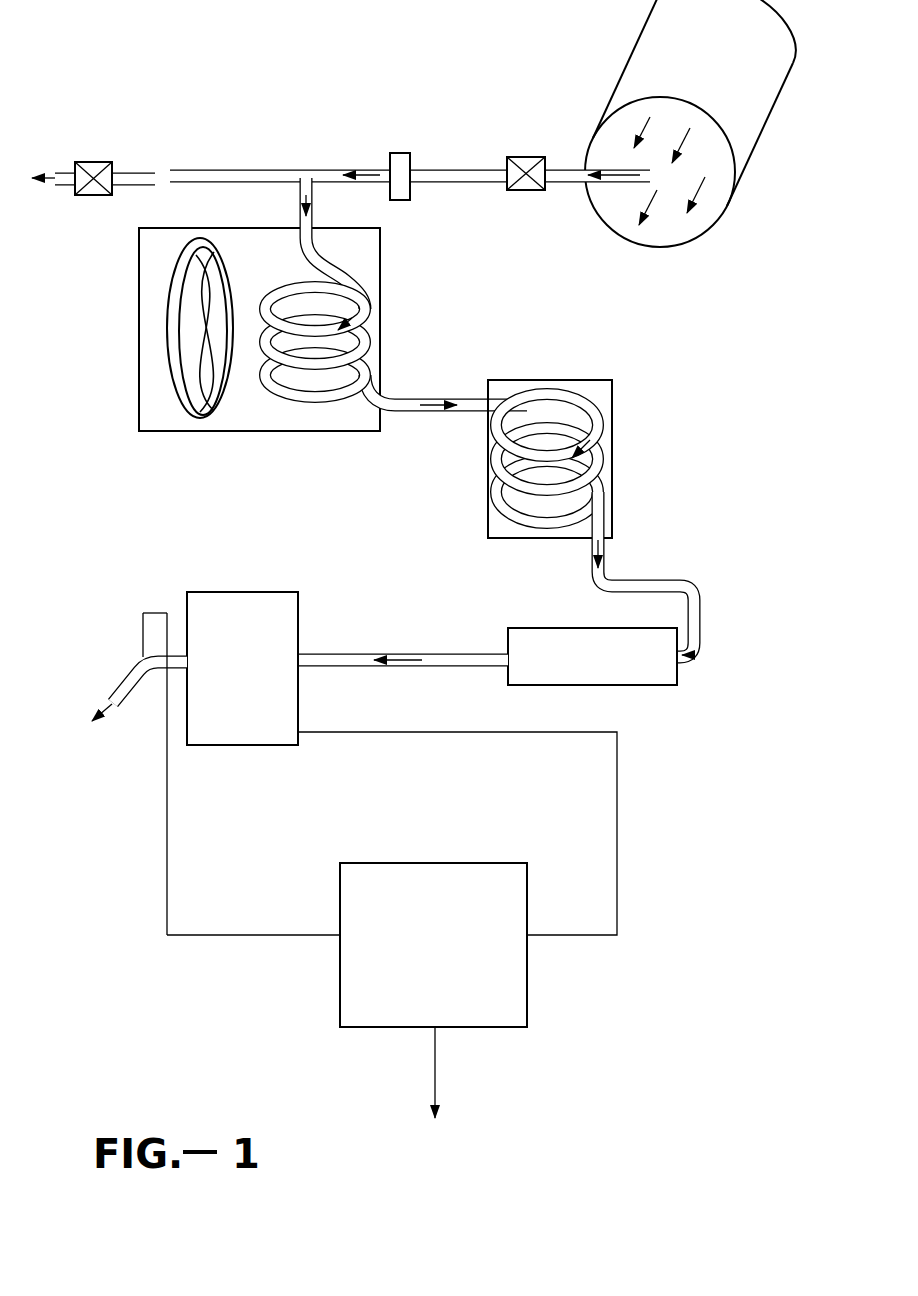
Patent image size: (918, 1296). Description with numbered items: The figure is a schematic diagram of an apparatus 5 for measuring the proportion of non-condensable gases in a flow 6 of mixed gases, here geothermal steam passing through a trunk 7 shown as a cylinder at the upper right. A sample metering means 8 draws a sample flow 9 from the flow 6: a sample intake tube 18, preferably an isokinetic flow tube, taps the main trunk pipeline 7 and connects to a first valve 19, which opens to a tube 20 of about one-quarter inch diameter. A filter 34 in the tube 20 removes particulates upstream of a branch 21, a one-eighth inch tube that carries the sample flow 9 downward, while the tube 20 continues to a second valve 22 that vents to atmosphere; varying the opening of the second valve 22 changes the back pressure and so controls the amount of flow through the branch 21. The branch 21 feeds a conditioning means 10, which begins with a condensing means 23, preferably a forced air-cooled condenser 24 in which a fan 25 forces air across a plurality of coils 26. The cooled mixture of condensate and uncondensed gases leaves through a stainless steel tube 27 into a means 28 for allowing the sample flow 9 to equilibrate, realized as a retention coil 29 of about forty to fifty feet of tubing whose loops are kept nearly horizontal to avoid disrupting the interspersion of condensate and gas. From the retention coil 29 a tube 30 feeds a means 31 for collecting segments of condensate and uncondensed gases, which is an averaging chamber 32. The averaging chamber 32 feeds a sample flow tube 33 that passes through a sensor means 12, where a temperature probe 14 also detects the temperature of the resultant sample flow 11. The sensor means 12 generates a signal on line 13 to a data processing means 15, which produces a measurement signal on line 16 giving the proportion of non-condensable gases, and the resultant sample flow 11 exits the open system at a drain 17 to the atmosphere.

The apparatus 5 is at (680, 340).
The flow of mixed gases 6 is at (710, 192).
The trunk 7 is at (640, 62).
The sample metering means 8 is at (300, 120).
The sample flow 9 is at (313, 198).
The conditioning means 10 is at (295, 478).
The resultant sample flow 11 is at (375, 652).
The sensor means 12 is at (289, 585).
The line 13 is at (383, 733).
The temperature probe 14 is at (167, 705).
The data processing means 15 is at (505, 870).
The line 16 is at (435, 1053).
The drain 17 is at (115, 688).
The sample intake tube 18 is at (627, 183).
The first valve 19 is at (522, 157).
The tube 20 is at (341, 150).
The branch 21 is at (297, 188).
The second valve 22 is at (97, 162).
The condensing means 23 is at (405, 262).
The forced air-cooled condenser 24 is at (237, 424).
The fan 25 is at (167, 327).
The coils 26 is at (373, 298).
The tube 27 is at (428, 400).
The means for allowing the sample flow to substantially equilibrate 28 is at (641, 436).
The retention coil 29 is at (577, 380).
The tube 30 is at (668, 580).
The means for collecting the segments of condensate and of uncondensed gases 31 is at (517, 612).
The averaging chamber 32 is at (595, 685).
The sample flow tube 33 is at (445, 667).
The filter 34 is at (388, 153).